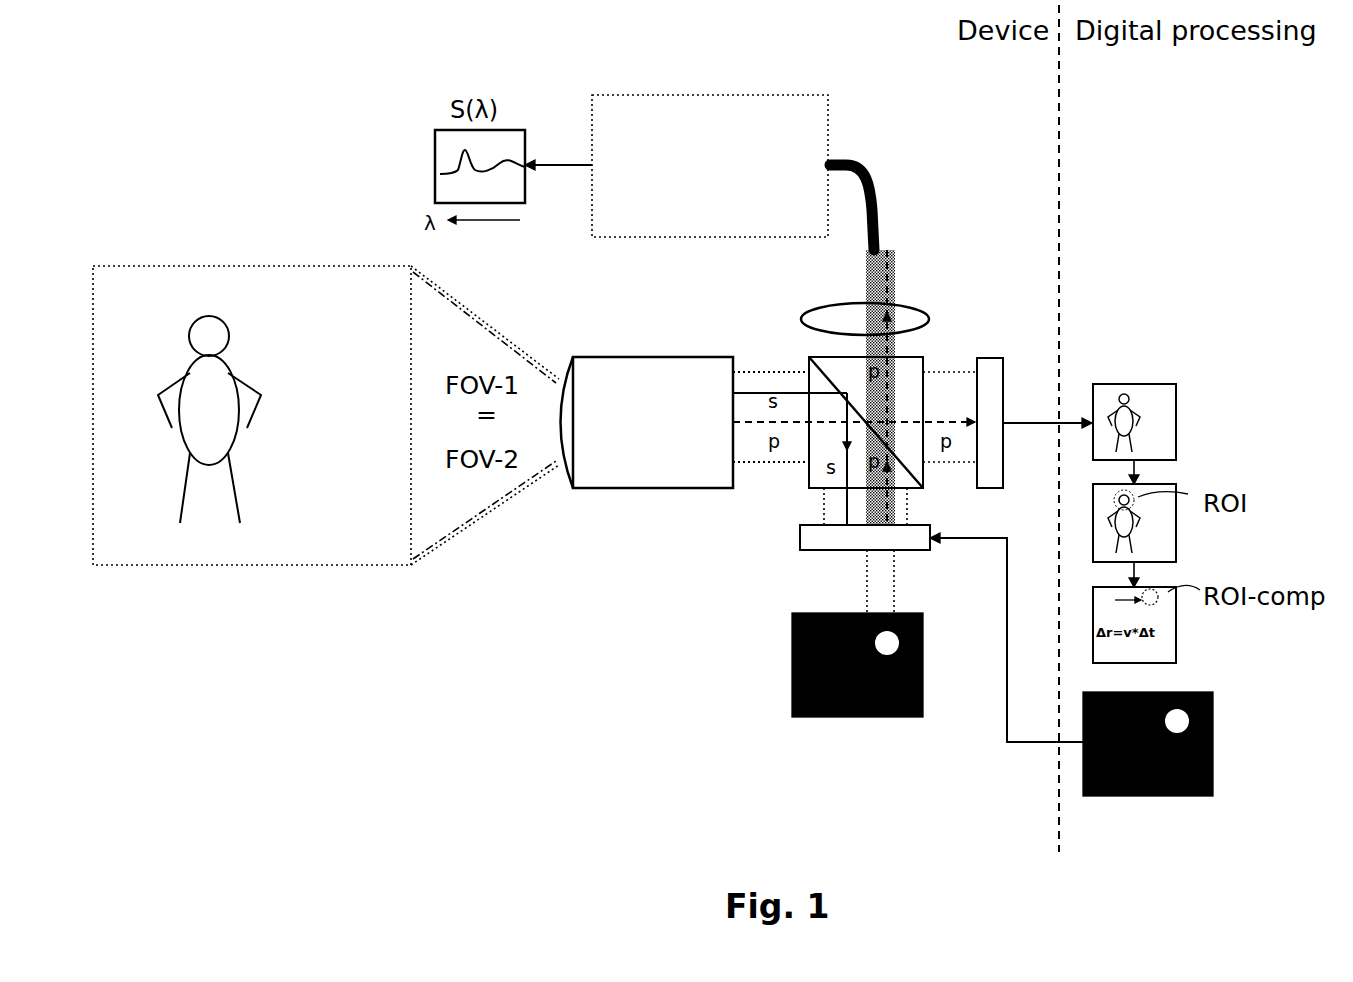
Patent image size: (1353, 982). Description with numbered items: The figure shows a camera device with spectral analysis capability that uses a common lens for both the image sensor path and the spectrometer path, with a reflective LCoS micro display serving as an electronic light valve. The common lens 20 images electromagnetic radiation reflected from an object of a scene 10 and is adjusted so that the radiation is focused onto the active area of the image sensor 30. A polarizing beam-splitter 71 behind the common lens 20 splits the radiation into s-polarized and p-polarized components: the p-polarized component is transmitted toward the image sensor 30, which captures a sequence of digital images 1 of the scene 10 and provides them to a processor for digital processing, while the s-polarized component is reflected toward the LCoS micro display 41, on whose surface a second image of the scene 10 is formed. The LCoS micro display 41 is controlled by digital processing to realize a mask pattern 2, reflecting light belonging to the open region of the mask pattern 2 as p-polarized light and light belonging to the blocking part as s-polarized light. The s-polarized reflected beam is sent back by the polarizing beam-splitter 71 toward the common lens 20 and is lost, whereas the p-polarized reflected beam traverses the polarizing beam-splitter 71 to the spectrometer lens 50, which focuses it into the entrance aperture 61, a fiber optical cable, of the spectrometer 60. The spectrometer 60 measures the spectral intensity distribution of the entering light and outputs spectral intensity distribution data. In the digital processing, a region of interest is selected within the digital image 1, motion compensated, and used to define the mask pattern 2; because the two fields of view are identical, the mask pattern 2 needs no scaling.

The scene 10 is at (196, 298).
The common lens 20 is at (654, 410).
The polarizing beam-splitter 71 is at (822, 395).
The spectrometer lens 50 is at (900, 312).
The image sensor 30 is at (990, 362).
The LCoS micro display 41 is at (800, 538).
The mask pattern 2 is at (792, 695).
The spectrometer 60 is at (694, 112).
The entrance aperture 61 is at (868, 178).
The digital image 1 is at (1150, 432).